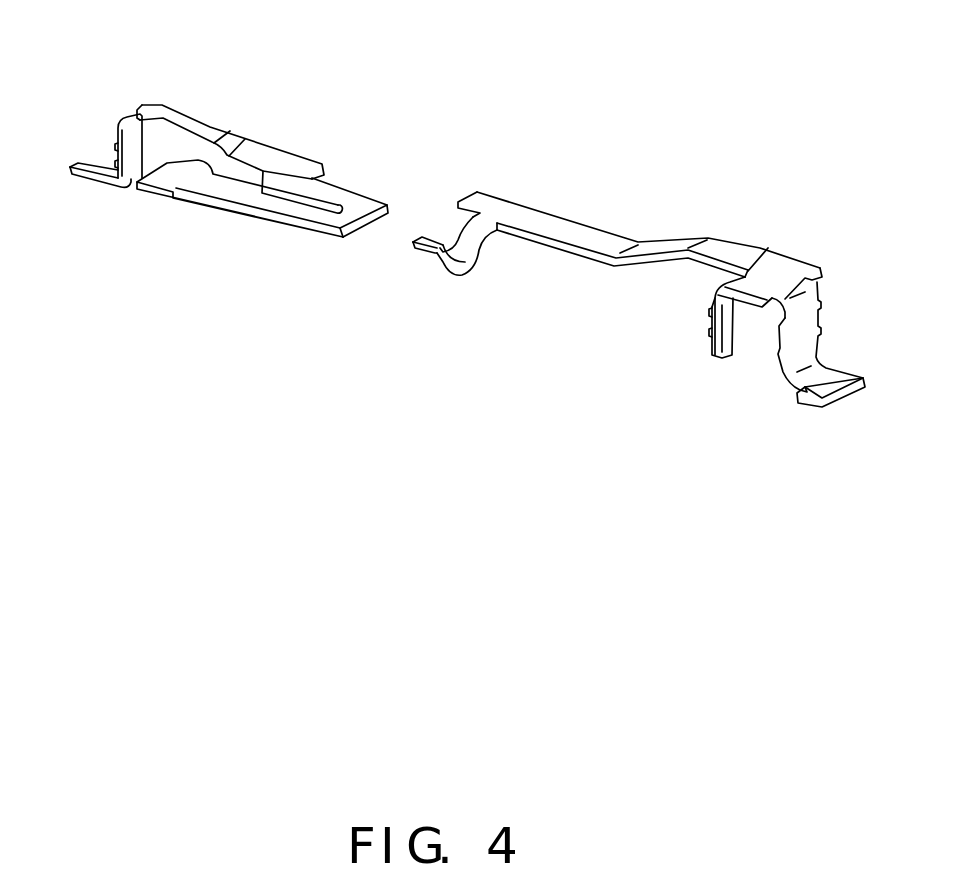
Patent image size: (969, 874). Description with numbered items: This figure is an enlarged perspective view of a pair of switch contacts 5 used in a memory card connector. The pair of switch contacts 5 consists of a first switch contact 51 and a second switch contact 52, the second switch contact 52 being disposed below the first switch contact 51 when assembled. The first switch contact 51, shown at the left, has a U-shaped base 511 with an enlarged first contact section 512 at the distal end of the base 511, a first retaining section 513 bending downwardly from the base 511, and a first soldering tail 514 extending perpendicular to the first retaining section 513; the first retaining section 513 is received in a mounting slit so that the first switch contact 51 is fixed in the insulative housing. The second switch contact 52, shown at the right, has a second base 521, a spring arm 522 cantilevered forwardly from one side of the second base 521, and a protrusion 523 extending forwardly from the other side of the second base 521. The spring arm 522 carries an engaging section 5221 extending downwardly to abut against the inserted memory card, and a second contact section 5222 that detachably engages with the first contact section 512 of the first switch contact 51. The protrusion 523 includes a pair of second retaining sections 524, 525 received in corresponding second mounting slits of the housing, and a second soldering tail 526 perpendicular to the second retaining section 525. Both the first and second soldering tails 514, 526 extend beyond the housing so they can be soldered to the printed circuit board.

The pair of switch contacts 5 is at (813, 182).
The first switch contact 51 is at (262, 105).
The U-shaped base 511 is at (317, 190).
The first contact section 512 is at (180, 173).
The first retaining section 513 is at (137, 147).
The first soldering tail 514 is at (92, 180).
The second switch contact 52 is at (612, 192).
The second base 521 is at (718, 250).
The spring arm 522 is at (472, 232).
The engaging section 5221 is at (460, 272).
The second contact section 5222 is at (417, 243).
The protrusion 523 is at (755, 288).
The second retaining section 524 is at (725, 320).
The second retaining section 525 is at (805, 338).
The second soldering tail 526 is at (827, 378).